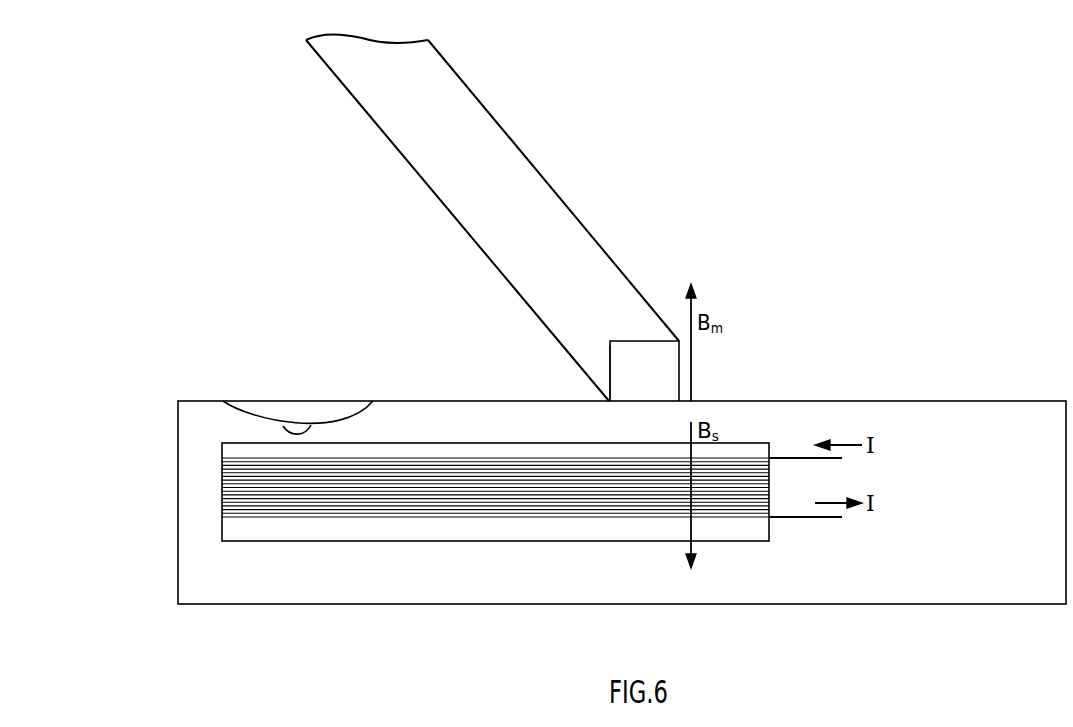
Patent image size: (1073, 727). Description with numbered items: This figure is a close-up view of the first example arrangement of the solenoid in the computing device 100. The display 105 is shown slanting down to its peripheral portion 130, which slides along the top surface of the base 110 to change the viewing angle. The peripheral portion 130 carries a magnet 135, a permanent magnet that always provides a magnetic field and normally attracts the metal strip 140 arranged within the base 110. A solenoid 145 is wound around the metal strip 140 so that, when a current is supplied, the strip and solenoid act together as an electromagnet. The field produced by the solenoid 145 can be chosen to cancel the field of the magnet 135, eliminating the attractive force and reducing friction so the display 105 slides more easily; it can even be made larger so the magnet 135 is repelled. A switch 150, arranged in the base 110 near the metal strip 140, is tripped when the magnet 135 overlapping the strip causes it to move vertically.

The computing device 100 is at (880, 201).
The display 105 is at (553, 186).
The base 110 is at (920, 401).
The peripheral portion 130 is at (660, 312).
The magnet 135 is at (610, 362).
The metal strip 140 is at (386, 541).
The solenoid 145 is at (535, 517).
The switch 150 is at (223, 404).